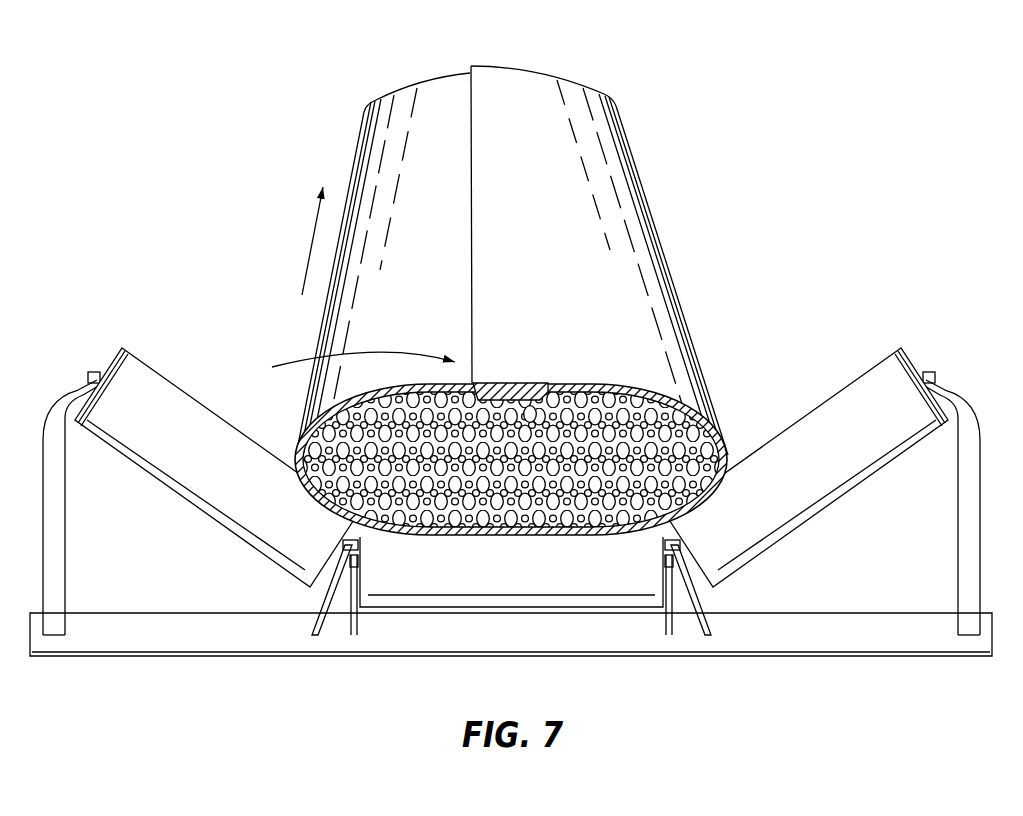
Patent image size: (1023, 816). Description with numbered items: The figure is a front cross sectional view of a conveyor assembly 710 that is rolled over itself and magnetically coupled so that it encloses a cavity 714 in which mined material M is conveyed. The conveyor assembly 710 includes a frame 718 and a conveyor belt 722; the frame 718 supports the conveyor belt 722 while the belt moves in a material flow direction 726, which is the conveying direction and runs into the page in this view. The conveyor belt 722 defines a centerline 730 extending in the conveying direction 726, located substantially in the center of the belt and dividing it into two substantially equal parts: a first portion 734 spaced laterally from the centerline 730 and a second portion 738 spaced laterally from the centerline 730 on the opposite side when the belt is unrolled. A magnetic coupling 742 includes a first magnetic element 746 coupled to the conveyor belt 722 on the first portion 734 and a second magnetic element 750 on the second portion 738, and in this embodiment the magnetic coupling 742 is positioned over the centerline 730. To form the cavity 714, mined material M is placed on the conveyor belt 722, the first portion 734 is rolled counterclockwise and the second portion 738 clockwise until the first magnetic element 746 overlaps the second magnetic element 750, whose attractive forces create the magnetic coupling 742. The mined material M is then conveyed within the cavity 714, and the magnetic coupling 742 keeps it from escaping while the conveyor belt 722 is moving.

The conveyor assembly 710 is at (294, 74).
The cavity 714 is at (672, 490).
The frame 718 is at (191, 670).
The conveyor belt 722 is at (622, 182).
The material flow direction 726 is at (312, 228).
The centerline 730 is at (498, 537).
The first portion 734 is at (533, 85).
The second portion 738 is at (418, 84).
The magnetic coupling 742 is at (345, 367).
The first magnetic element 746 is at (510, 383).
The second magnetic element 750 is at (532, 408).
The mined material M is at (457, 507).